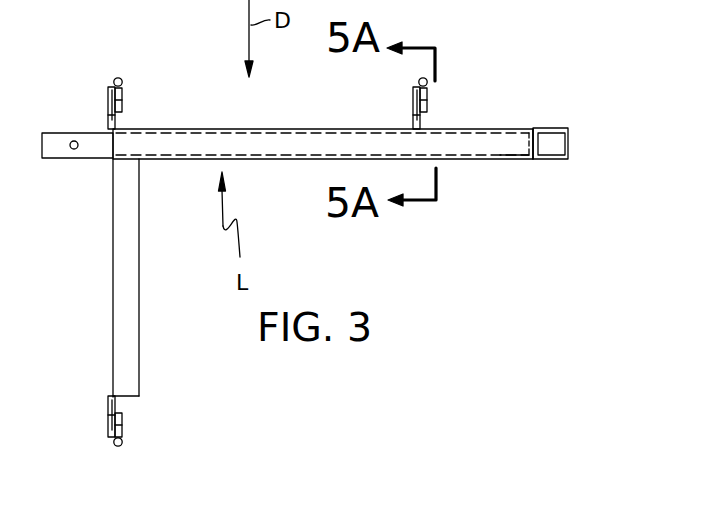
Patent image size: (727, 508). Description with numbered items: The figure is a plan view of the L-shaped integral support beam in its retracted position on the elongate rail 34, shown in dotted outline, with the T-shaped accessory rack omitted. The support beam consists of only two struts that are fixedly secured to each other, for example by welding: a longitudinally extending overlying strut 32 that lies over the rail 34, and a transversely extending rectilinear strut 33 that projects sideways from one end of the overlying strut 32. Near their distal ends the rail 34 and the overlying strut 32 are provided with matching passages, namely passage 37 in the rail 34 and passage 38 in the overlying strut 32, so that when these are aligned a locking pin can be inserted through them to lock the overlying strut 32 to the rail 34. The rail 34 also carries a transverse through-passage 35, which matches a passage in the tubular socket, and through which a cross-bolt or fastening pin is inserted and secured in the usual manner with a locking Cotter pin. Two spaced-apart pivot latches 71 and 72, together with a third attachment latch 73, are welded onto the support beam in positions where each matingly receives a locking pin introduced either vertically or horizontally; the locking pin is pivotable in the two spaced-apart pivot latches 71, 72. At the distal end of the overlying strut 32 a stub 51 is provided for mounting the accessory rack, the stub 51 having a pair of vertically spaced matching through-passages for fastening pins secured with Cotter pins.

The overlying strut 32 is at (253, 160).
The rectilinear strut 33 is at (139, 317).
The rail 34 is at (53, 159).
The through-passage 35 is at (76, 141).
The passage 37 is at (517, 149).
The passage 38 is at (519, 129).
The stub 51 is at (570, 120).
The pivot latch 71 is at (413, 98).
The pivot latch 72 is at (108, 100).
The attachment latch 73 is at (107, 421).